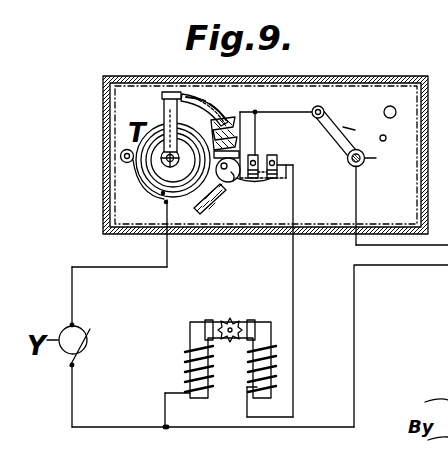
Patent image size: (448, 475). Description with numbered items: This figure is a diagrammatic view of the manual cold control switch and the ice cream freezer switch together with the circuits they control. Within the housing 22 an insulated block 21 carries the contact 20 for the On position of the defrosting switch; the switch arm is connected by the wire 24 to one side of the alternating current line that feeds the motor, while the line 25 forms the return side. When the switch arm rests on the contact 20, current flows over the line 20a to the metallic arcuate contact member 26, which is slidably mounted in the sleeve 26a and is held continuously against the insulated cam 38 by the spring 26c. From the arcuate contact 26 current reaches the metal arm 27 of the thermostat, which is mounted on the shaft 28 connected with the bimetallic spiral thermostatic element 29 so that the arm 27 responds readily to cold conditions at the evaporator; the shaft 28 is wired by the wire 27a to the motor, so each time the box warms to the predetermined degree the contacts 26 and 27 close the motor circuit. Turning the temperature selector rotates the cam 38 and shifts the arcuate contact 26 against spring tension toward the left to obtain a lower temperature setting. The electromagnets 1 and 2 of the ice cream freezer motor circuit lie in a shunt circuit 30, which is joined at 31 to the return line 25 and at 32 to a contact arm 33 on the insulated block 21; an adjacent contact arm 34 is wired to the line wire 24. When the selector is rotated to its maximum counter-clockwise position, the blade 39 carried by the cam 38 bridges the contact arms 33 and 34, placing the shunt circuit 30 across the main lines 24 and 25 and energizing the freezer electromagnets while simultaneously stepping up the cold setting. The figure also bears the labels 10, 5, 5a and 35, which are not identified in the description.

The section line 10 is at (115, 76).
The housing 22 is at (102, 95).
The insulated block 21 is at (396, 80).
The metal arm 27 is at (160, 102).
The wire 27a is at (72, 274).
The bimetallic spiral thermostatic element 29 is at (120, 153).
The shaft 28 is at (164, 162).
The arcuate contact member 26 is at (203, 122).
The sleeve 26a is at (224, 66).
The spring 26c is at (244, 106).
The contact 20 is at (331, 120).
The line 20a is at (307, 101).
The contact 35 is at (256, 128).
The contact arm 33 is at (274, 144).
The connection 32 is at (284, 154).
The contact arm 34 is at (284, 180).
The insulated cam 38 is at (240, 180).
The circuit closing blade 39 is at (220, 205).
The wire 24 is at (358, 187).
The shunt circuit 30 is at (294, 311).
The armature 5 is at (212, 320).
The star wheel 5a is at (234, 318).
The electromagnet 2 is at (190, 334).
The electromagnet 1 is at (272, 332).
The connection 31 is at (167, 428).
The line 25 is at (415, 267).